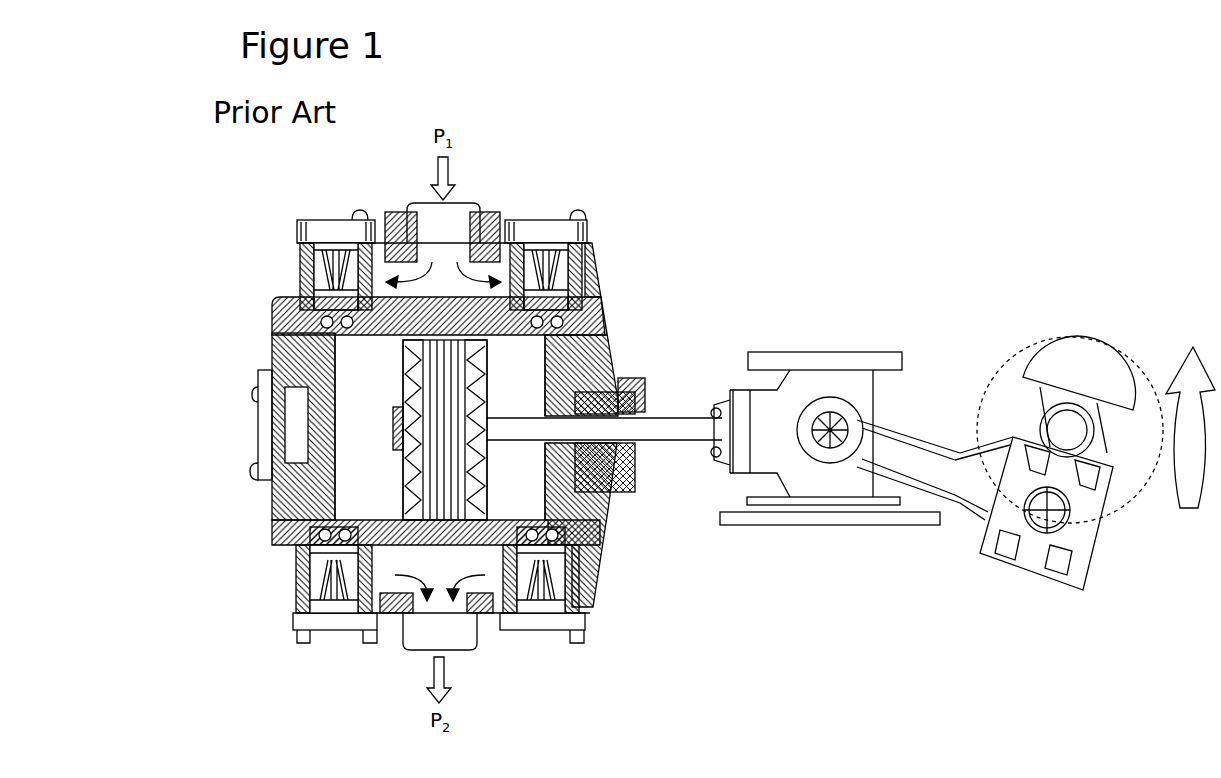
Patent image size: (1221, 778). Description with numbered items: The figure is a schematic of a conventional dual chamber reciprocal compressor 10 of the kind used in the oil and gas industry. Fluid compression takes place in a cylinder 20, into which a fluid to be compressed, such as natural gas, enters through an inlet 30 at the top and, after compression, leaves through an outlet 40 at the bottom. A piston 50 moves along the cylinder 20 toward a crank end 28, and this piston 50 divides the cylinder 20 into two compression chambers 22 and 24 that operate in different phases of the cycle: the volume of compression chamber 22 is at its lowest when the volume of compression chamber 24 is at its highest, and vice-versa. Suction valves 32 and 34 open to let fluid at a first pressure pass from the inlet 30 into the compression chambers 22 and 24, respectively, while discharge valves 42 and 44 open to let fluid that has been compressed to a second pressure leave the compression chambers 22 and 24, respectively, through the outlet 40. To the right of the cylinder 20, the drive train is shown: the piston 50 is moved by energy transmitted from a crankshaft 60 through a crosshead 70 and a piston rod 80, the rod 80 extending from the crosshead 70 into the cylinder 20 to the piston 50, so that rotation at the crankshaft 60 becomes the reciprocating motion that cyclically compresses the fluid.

The dual chamber reciprocal compressor 10 is at (758, 274).
The cylinder 20 is at (493, 545).
The compression chamber 22 is at (337, 490).
The compression chamber 24 is at (525, 378).
The crank end 28 is at (283, 358).
The inlet 30 is at (447, 230).
The suction valve 32 is at (300, 258).
The suction valve 34 is at (568, 262).
The outlet 40 is at (453, 643).
The discharge valve 42 is at (318, 590).
The discharge valve 44 is at (573, 590).
The piston 50 is at (480, 484).
The crankshaft 60 is at (1093, 553).
The crosshead 70 is at (802, 387).
The piston rod 80 is at (664, 417).